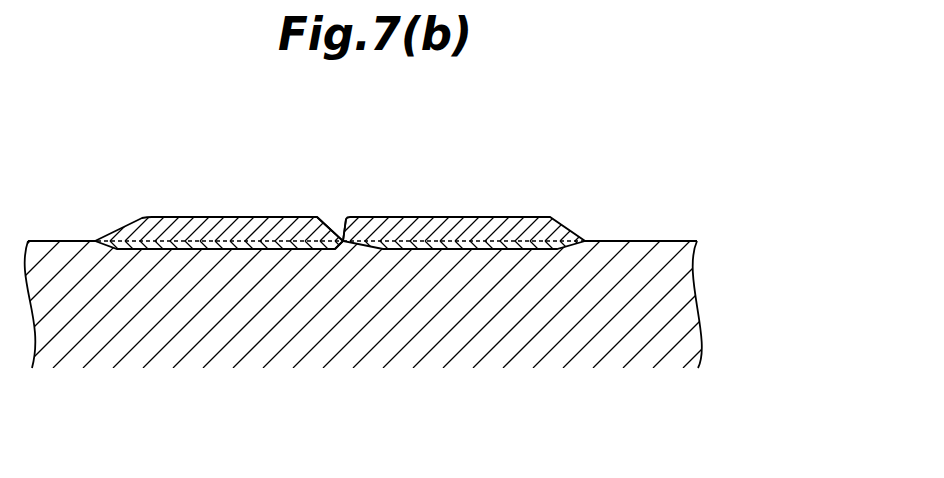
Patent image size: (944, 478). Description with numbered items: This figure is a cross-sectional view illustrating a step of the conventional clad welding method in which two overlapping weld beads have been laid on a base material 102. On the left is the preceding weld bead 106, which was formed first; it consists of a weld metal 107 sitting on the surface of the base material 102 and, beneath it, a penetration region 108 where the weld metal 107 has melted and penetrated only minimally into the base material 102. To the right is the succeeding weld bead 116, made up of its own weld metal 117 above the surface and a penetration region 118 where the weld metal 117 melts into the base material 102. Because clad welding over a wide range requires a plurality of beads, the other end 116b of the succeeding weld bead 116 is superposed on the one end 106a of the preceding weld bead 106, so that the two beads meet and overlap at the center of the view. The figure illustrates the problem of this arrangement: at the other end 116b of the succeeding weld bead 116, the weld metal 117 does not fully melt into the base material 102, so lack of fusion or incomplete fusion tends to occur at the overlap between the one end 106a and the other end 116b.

The base material 102 is at (705, 293).
The preceding weld bead 106 is at (257, 110).
The one end of the preceding weld bead 106a is at (343, 241).
The weld metal 107 is at (140, 217).
The penetration region 108 is at (213, 217).
The succeeding weld bead 116 is at (633, 108).
The other end of the succeeding weld bead 116b is at (343, 241).
The weld metal 117 is at (513, 225).
The penetration region 118 is at (580, 233).